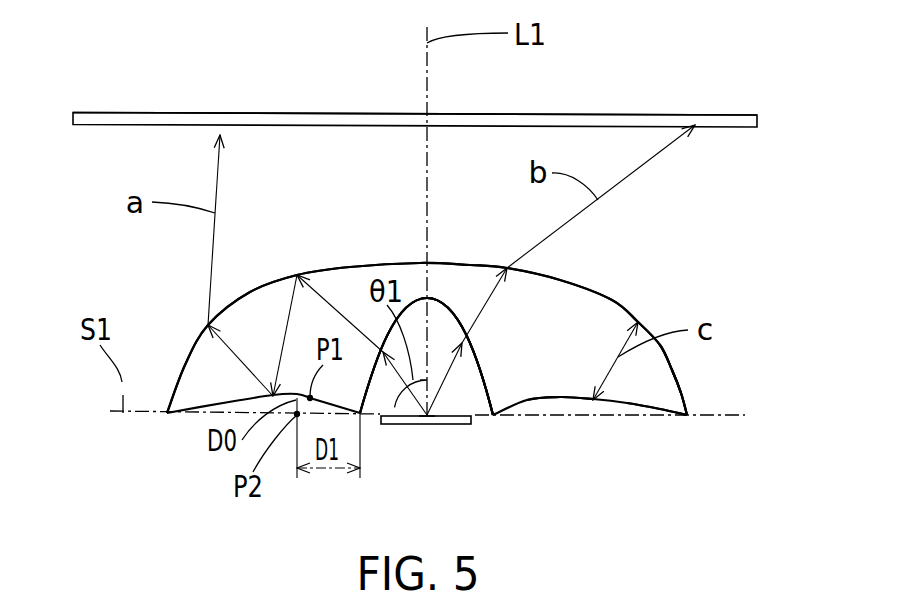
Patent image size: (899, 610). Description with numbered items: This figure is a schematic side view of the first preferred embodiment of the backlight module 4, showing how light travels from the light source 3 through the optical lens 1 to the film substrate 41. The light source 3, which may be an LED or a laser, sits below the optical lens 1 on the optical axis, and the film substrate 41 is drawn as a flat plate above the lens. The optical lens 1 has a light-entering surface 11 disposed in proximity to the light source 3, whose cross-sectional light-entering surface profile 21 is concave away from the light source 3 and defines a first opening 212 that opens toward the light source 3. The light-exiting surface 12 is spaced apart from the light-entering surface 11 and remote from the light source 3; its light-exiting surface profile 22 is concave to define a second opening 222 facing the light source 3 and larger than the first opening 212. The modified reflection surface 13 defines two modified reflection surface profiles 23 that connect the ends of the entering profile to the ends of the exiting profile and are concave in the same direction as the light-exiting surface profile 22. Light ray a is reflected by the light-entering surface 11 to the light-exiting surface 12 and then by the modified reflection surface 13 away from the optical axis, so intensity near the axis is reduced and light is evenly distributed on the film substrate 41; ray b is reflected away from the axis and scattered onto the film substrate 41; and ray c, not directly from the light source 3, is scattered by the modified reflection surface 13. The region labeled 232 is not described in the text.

The optical lens 1 is at (697, 277).
The light source 3 is at (389, 423).
The backlight module 4 is at (87, 90).
The light-entering surface 11 is at (453, 387).
The light-exiting surface 12 is at (582, 275).
The modified reflection surface 13 is at (571, 414).
The light-entering surface profile 21 is at (478, 368).
The light-exiting surface profile 22 is at (683, 390).
The modified reflection surface profile 23 is at (632, 405).
The film substrate 41 is at (127, 112).
The first opening 212 is at (480, 413).
The second opening 222 is at (670, 404).
The central portion of bottom reflective surface 232 is at (543, 413).